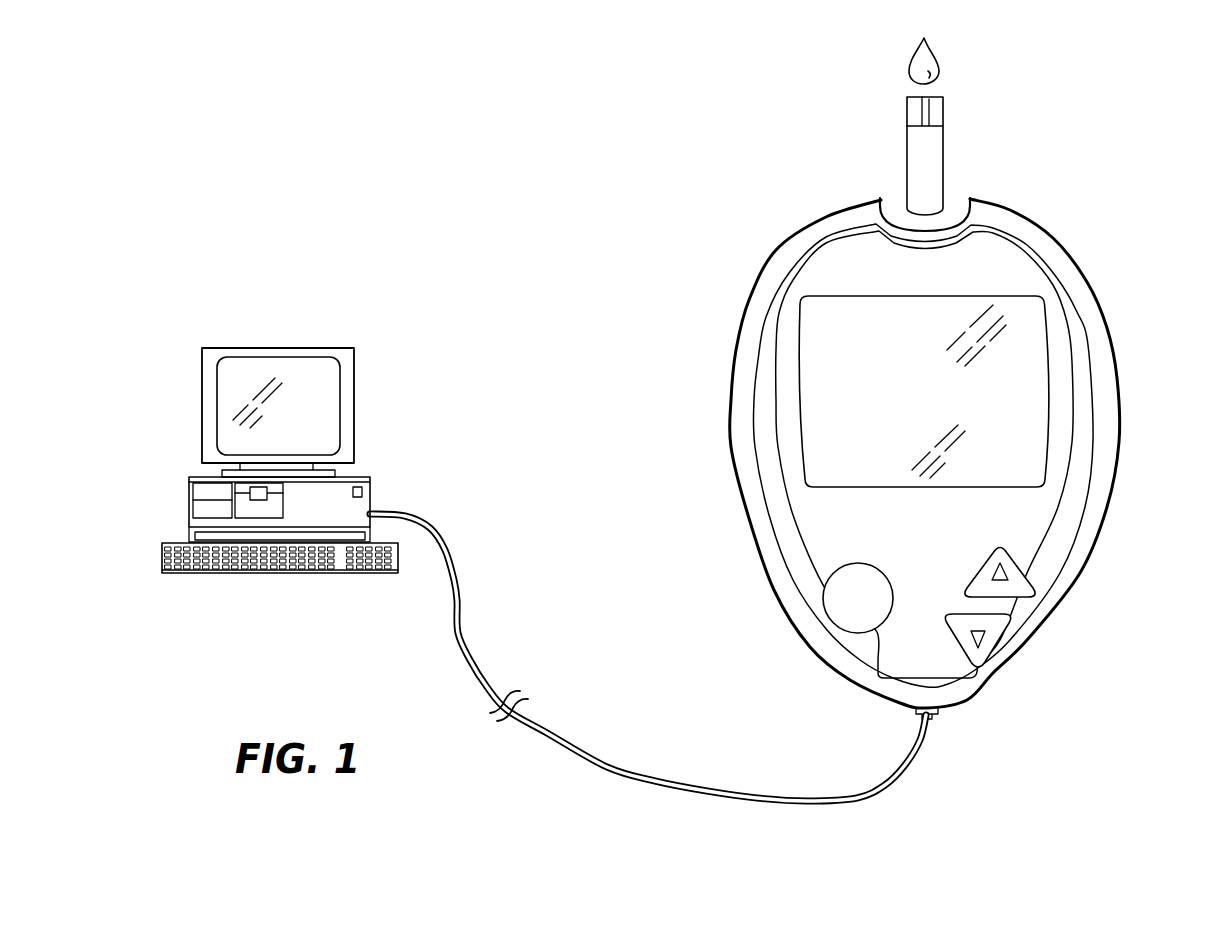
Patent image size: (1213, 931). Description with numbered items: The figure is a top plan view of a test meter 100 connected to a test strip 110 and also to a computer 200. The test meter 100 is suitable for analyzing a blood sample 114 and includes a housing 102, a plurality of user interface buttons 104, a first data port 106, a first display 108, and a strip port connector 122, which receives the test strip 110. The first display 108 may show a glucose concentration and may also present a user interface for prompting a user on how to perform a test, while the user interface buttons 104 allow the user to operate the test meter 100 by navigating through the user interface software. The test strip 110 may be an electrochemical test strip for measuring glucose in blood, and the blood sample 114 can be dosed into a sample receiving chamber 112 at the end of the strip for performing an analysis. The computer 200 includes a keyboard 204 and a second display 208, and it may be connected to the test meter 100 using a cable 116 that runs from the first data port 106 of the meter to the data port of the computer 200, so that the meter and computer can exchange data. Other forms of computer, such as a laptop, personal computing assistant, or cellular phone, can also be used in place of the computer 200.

The test meter 100 is at (1047, 194).
The housing 102 is at (1110, 422).
The user interface buttons 104 is at (823, 597).
The first data port 106 is at (937, 722).
The first display 108 is at (1035, 333).
The test strip 110 is at (945, 168).
The sample receiving chamber 112 is at (933, 113).
The blood sample 114 is at (933, 63).
The cable 116 is at (817, 797).
The strip port connector 122 is at (903, 198).
The computer 200 is at (372, 495).
The keyboard 204 is at (310, 575).
The second display 208 is at (328, 397).